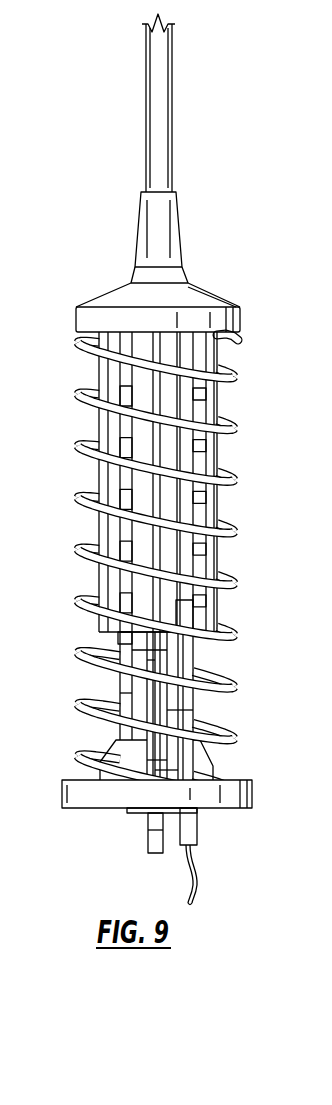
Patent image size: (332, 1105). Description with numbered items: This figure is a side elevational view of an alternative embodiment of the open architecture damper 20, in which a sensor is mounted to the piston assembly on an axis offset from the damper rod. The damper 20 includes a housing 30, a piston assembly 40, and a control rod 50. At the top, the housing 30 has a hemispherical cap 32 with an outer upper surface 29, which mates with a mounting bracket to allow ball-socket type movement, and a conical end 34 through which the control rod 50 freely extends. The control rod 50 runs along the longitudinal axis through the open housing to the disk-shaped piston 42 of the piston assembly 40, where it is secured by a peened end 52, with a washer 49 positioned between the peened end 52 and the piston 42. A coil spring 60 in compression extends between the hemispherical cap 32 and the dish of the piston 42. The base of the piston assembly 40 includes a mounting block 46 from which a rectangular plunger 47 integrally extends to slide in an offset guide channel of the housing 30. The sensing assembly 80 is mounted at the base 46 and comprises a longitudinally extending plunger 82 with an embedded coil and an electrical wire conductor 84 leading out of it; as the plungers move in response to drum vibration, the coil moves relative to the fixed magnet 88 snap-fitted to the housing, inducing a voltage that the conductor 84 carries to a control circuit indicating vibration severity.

The open architecture damper 20 is at (176, 488).
The outer upper surface 29 is at (205, 288).
The housing 30 is at (189, 243).
The hemispherical cap 32 is at (242, 314).
The conical end 34 is at (178, 196).
The piston assembly 40 is at (164, 624).
The piston 42 is at (253, 795).
The mounting block 46 is at (125, 756).
The plunger 47 is at (125, 642).
The washer 49 is at (127, 810).
The control rod 50 is at (172, 113).
The peened end 52 is at (150, 845).
The coil spring 60 is at (228, 468).
The sensing assembly 80 is at (215, 706).
The plunger 82 is at (197, 719).
The electrical wire conductor 84 is at (208, 868).
The fixed magnet 88 is at (185, 612).